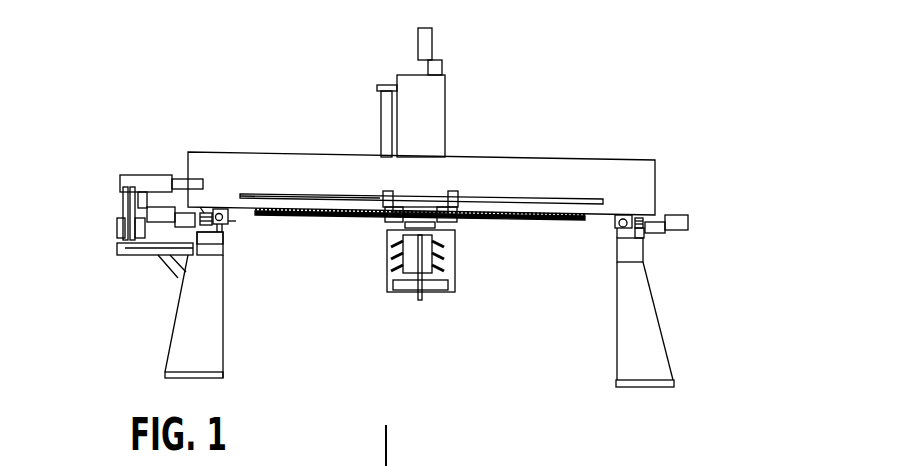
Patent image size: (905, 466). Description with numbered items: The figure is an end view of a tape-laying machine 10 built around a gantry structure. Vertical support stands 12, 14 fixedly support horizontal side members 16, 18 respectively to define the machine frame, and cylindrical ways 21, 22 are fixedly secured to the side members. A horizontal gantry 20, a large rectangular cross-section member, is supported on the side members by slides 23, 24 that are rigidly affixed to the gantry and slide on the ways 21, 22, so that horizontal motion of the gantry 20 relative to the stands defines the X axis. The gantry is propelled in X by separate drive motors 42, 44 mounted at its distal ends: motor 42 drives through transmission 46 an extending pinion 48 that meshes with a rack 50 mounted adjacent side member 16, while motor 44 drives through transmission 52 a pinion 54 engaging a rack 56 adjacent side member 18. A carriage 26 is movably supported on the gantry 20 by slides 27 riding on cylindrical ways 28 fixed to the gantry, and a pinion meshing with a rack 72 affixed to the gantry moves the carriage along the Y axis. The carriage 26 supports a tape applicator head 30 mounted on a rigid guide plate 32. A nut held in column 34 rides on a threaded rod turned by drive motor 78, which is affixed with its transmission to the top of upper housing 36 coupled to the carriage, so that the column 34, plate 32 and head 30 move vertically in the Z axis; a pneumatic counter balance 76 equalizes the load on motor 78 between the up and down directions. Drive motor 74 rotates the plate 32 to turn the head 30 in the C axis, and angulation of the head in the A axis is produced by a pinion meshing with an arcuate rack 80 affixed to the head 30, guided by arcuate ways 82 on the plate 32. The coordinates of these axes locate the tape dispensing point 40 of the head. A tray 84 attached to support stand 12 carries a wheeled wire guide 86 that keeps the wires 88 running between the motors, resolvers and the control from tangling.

The machine 10 is at (686, 84).
The vertical support stand 12 is at (180, 337).
The vertical support stand 14 is at (660, 354).
The horizontal side member 16 is at (210, 250).
The horizontal side member 18 is at (633, 258).
The gantry 20 is at (638, 161).
The cylindrical way 21 is at (228, 209).
The cylindrical way 22 is at (629, 215).
The slide 23 is at (234, 216).
The slide 24 is at (618, 228).
The carriage 26 is at (386, 230).
The slide 27 is at (472, 166).
The cylindrical way 28 is at (502, 184).
The tape applicator head 30 is at (392, 278).
The guide plate 32 is at (456, 281).
The column 34 is at (430, 229).
The upper housing 36 is at (437, 115).
The tape dispensing point 40 is at (420, 302).
The drive motor 42 is at (150, 179).
The drive motor 44 is at (690, 223).
The transmission 46 is at (158, 209).
The pinion 48 is at (208, 212).
The rack 50 is at (217, 243).
The transmission 52 is at (665, 233).
The pinion 54 is at (656, 201).
The rack 56 is at (645, 250).
The rack 72 is at (334, 222).
The drive motor 74 is at (428, 32).
The pneumatic counter balance 76 is at (380, 118).
The drive motor 78 is at (443, 66).
The arcuate rack 80 is at (440, 255).
The arcuate way 82 is at (392, 259).
The tray 84 is at (123, 258).
The wheeled wire guide 86 is at (118, 214).
The wires 88 is at (122, 206).